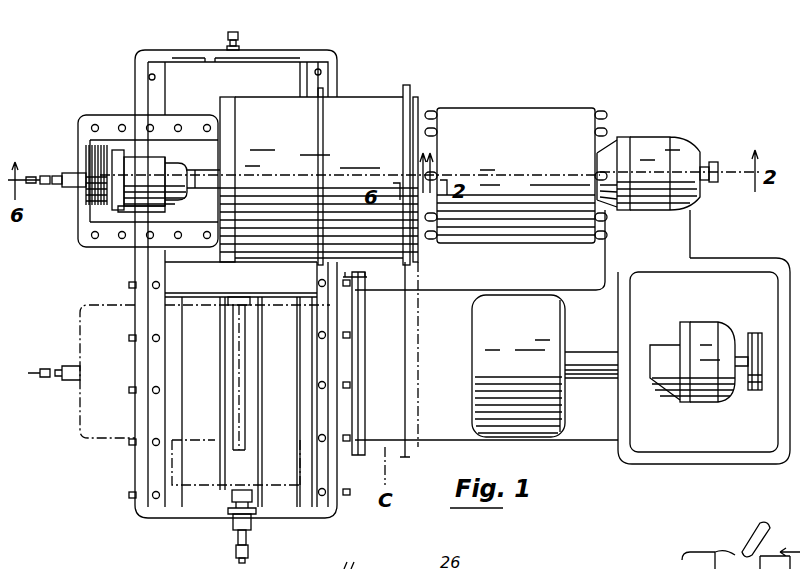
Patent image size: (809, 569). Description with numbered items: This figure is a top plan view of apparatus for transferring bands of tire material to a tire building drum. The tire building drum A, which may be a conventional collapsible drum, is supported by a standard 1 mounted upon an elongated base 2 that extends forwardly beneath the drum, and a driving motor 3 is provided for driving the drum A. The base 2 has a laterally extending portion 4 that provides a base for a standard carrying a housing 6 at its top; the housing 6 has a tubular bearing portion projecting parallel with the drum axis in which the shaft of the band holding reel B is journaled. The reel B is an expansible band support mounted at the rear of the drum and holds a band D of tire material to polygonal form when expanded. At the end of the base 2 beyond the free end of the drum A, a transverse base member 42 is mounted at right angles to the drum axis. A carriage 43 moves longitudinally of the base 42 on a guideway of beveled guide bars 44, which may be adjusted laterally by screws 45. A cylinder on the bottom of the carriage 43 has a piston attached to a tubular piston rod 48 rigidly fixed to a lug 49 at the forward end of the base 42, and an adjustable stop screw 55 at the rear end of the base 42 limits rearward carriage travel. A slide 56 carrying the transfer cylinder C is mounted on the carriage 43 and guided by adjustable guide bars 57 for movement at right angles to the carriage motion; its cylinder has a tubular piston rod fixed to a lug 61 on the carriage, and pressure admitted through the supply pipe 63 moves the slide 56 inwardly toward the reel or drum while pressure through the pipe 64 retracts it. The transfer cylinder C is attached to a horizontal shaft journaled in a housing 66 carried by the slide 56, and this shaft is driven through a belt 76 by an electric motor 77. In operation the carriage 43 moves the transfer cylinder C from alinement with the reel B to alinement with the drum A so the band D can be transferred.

The standard 1 is at (657, 437).
The elongated base 2 is at (460, 433).
The driving motor 3 is at (698, 332).
The laterally extending portion 4 is at (673, 236).
The housing 6 is at (662, 143).
The transverse base member 42 is at (138, 458).
The carriage 43 is at (298, 72).
The beveled guide bars 44 is at (160, 367).
The screws 45 is at (347, 430).
The tubular piston rod 48 is at (243, 433).
The lug 49 is at (253, 520).
The screw 55 is at (228, 36).
The slide 56 is at (80, 120).
The adjustable guide bars 57 is at (113, 240).
The lug 61 is at (72, 190).
The pressure supply pipe 63 is at (32, 177).
The pipe 64 is at (55, 188).
The housing 66 is at (190, 163).
The belt 76 is at (90, 160).
The electric motor 77 is at (132, 157).
The tire building drum A is at (537, 433).
The band holding reel B is at (603, 113).
The transfer cylinder C is at (370, 107).
The band D is at (508, 122).